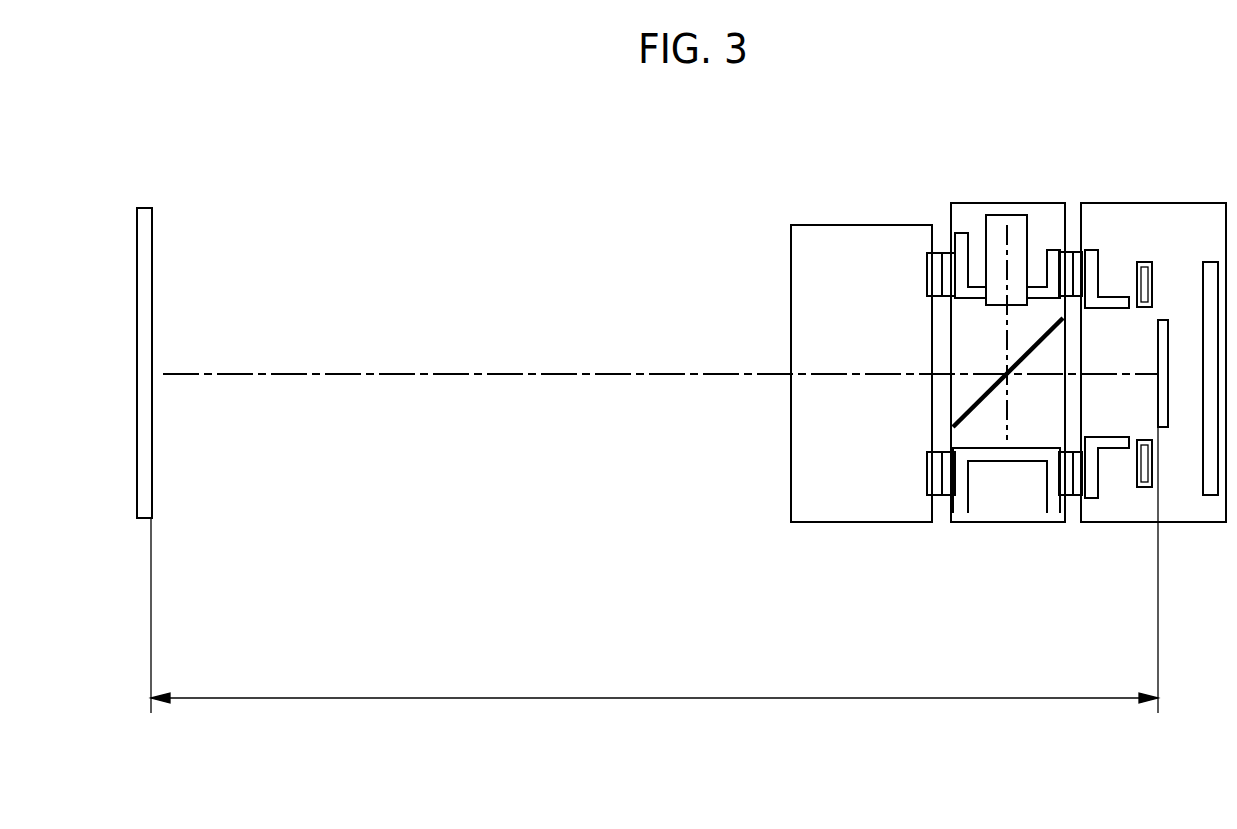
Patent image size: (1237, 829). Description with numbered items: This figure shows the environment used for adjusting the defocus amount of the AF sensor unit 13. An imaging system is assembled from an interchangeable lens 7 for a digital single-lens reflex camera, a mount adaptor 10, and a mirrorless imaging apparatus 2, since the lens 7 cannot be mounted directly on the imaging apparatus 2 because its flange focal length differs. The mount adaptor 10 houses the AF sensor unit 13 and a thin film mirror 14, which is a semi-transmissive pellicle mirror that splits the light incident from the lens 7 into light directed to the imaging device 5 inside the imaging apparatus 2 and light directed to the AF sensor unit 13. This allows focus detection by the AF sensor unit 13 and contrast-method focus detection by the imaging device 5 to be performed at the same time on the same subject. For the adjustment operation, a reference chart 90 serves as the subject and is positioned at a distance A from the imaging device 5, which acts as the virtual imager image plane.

The imaging apparatus 2 is at (1150, 203).
The imaging device 5 is at (1161, 428).
The lens 7 is at (815, 225).
The mount adaptor 10 is at (963, 202).
The AF sensor unit 13 is at (1007, 215).
The thin film mirror 14 is at (975, 402).
The reference chart 90 is at (152, 260).
The distance A is at (654, 570).